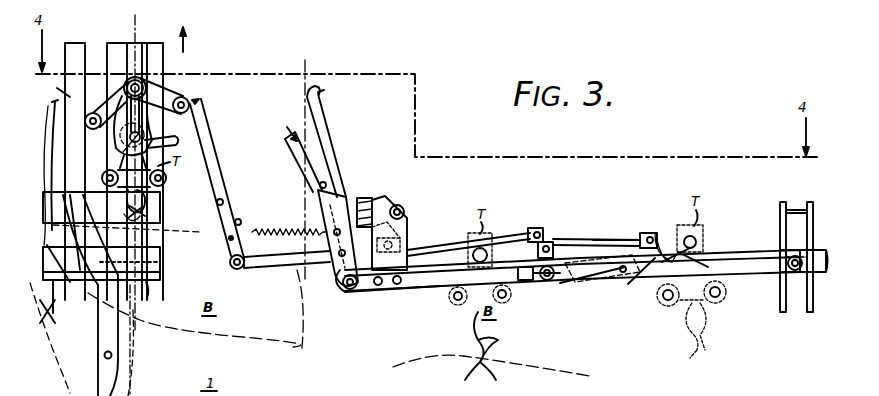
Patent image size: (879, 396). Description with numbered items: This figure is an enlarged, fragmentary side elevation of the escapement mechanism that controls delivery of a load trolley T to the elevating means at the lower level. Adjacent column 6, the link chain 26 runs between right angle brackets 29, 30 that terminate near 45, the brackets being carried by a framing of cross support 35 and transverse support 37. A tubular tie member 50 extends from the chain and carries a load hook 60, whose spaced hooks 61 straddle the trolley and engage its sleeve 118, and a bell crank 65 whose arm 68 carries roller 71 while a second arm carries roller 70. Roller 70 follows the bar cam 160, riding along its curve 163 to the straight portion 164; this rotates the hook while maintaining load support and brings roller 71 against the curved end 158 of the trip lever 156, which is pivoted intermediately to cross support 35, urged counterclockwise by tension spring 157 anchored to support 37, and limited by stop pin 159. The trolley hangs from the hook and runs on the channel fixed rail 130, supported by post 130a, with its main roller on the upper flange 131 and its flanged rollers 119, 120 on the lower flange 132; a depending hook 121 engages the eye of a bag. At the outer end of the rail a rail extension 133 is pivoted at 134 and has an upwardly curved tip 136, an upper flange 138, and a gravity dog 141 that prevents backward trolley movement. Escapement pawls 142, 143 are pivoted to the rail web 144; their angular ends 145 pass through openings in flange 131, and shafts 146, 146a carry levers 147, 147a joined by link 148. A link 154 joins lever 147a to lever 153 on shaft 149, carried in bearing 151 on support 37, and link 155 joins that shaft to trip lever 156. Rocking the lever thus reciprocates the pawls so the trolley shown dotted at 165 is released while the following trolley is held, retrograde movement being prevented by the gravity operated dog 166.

The bar cam 160 is at (78, 43).
The link chain 26 is at (137, 32).
The tubular tie member 50 is at (147, 84).
The bell crank 65 is at (178, 92).
The roller 71 is at (187, 100).
The sleeve 118 is at (141, 137).
The arm 68 is at (100, 112).
The roller 70 is at (86, 118).
The load hook 60 is at (110, 130).
The hook 61 is at (180, 140).
The flanged roller 119 is at (166, 181).
The flanged roller 120 is at (102, 178).
The hook 121 is at (145, 213).
The straight portion 164 is at (51, 89).
The trip lever 156 is at (212, 162).
The curved end 158 is at (199, 102).
The stop pin 159 is at (241, 218).
The tension spring 157 is at (280, 242).
The upper flange 138 is at (327, 140).
The upwardly curved tip 136 is at (323, 92).
The dog 141 is at (292, 153).
The rail extension 133 is at (349, 193).
The transverse support 37 is at (390, 195).
The bearing 151 is at (405, 210).
The shaft 149 is at (393, 206).
The lever 153 is at (400, 228).
The fixed rail 130 is at (752, 262).
The upper flange 131 is at (731, 248).
The lower flange 132 is at (751, 275).
The pivot 134 is at (352, 291).
The link 155 is at (316, 256).
The post 130a is at (797, 306).
The link 154 is at (438, 242).
The angular end 145 is at (522, 250).
The lever 147 is at (653, 232).
The lever 147a is at (548, 250).
The shaft 146 is at (656, 238).
The shaft 146a is at (564, 248).
The link 148 is at (593, 241).
The pawl 142 is at (545, 280).
The web 144 is at (645, 272).
The gravity operated dog 166 is at (578, 285).
The pawl 143 is at (662, 303).
The dotted line position 165 is at (520, 375).
The curve 163 is at (85, 285).
The column 6 is at (44, 328).
The right angle bracket 30 is at (150, 279).
The right angle bracket 29 is at (112, 262).
The cross support 35 is at (195, 222).
The guide bracket termination 45 is at (155, 296).